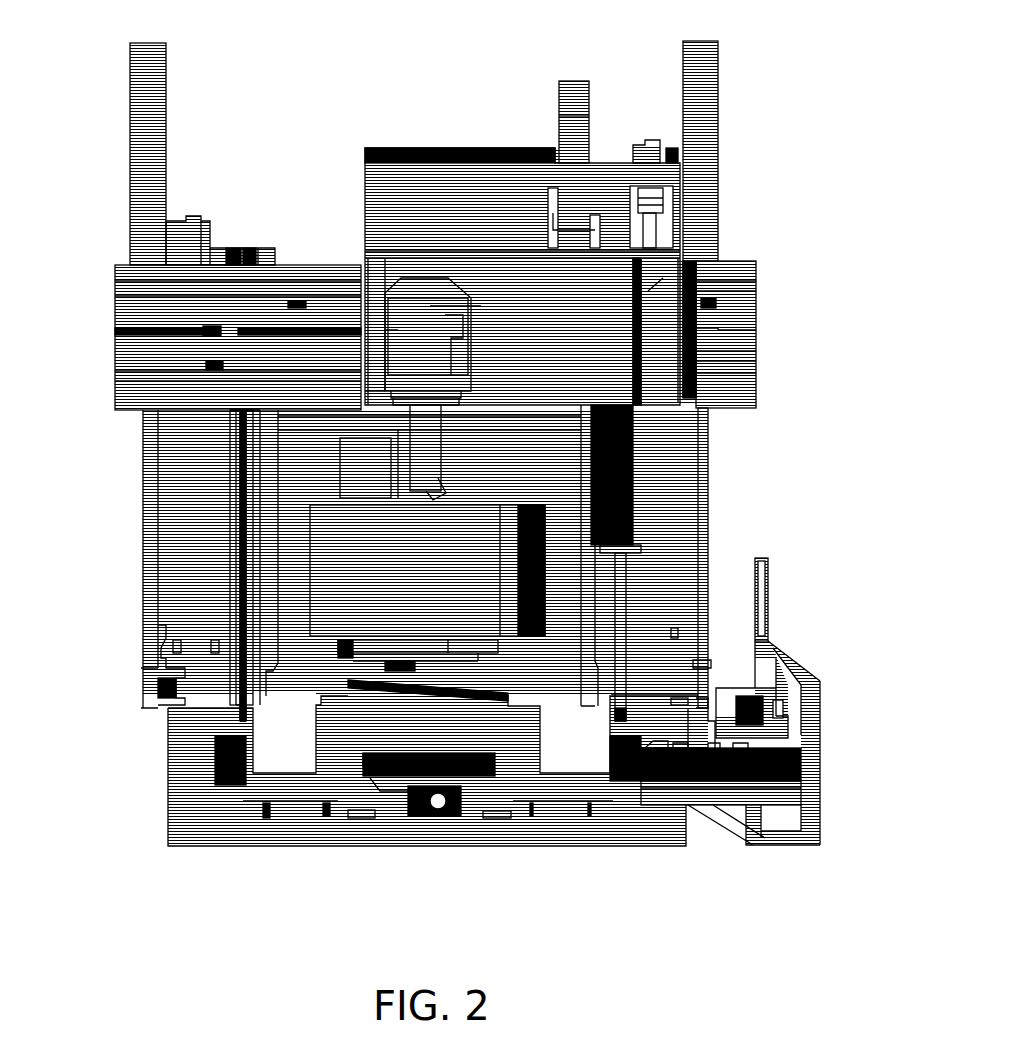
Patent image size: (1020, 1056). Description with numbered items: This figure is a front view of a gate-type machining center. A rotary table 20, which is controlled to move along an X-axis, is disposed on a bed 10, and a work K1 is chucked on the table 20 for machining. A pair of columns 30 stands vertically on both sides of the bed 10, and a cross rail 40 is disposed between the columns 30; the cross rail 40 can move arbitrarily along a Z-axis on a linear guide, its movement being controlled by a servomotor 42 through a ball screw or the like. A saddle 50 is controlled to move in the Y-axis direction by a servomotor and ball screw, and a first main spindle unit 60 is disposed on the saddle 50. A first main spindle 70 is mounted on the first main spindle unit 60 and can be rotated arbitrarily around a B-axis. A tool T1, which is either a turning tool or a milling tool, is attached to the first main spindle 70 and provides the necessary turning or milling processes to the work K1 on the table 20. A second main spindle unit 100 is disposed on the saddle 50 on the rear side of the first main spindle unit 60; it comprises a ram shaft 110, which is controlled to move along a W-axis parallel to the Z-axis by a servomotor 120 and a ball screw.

The bed 10 is at (173, 766).
The rotary table 20 is at (380, 673).
The columns 30 is at (170, 443).
The cross rail 40 is at (125, 303).
The servomotor 42 is at (185, 227).
The saddle 50 is at (647, 278).
The first main spindle unit 60 is at (565, 358).
The first main spindle 70 is at (407, 313).
The second main spindle unit 100 is at (676, 447).
The ram shaft 110 is at (625, 477).
The servomotor 120 is at (663, 137).
The work K1 is at (353, 550).
The tool T1 is at (427, 440).